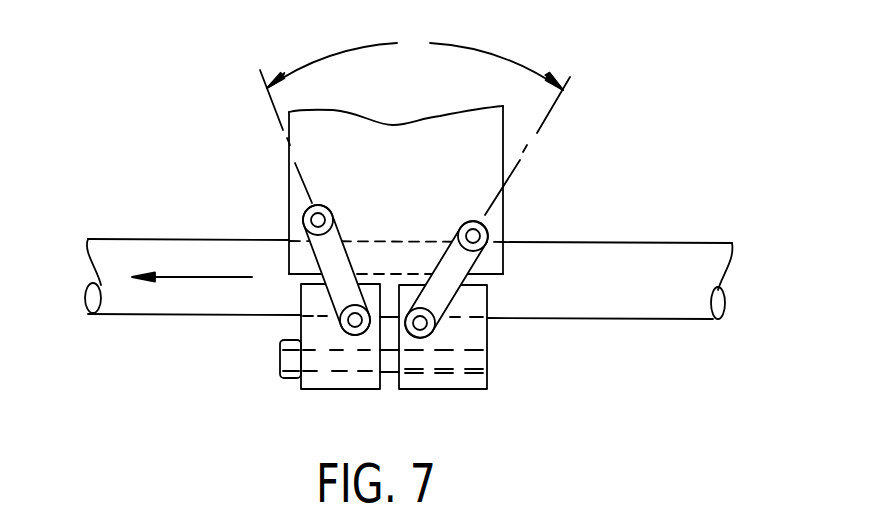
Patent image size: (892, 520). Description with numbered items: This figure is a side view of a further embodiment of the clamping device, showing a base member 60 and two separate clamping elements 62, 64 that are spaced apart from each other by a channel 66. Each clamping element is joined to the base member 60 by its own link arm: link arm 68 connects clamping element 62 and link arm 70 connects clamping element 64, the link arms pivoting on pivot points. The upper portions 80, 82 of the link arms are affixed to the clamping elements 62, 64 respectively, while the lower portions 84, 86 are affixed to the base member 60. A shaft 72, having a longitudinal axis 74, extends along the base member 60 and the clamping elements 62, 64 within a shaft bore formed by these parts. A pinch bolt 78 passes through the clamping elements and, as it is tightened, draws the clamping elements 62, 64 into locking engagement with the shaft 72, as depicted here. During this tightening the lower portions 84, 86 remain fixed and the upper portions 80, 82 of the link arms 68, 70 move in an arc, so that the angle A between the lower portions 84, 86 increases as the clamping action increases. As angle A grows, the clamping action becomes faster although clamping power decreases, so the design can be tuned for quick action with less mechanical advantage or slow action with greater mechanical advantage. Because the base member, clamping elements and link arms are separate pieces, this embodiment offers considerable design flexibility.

The base member 60 is at (417, 189).
The clamping element 62 is at (467, 333).
The clamping element 64 is at (327, 327).
The channel 66 is at (388, 382).
The link arm 68 is at (473, 258).
The link arm 70 is at (323, 247).
The shaft 72 is at (670, 292).
The longitudinal axis 74 is at (186, 278).
The pinch bolt 78 is at (289, 379).
The upper portion of link arm 80 is at (432, 314).
The upper portion of link arm 82 is at (341, 313).
The lower portion of link arm 84 is at (470, 220).
The lower portion of link arm 86 is at (328, 214).
The angle A is at (415, 124).